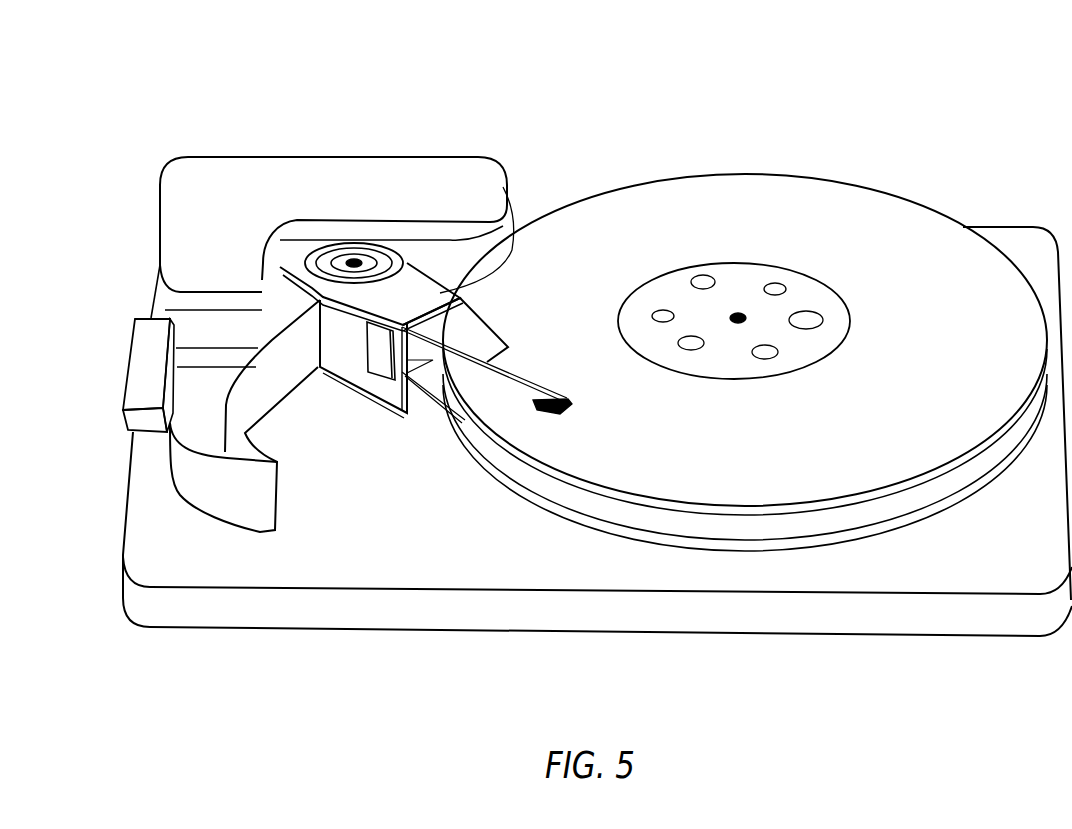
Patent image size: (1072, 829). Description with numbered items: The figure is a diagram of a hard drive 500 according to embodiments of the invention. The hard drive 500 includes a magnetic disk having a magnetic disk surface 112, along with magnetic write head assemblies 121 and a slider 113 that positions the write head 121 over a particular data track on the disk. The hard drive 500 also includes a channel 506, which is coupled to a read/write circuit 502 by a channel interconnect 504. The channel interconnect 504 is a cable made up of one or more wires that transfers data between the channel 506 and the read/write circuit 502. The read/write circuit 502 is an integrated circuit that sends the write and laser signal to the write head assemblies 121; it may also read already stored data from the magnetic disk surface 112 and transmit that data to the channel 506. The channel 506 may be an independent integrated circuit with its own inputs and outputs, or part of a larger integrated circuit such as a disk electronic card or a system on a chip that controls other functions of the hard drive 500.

The hard drive 500 is at (1043, 56).
The read/write circuit 502 is at (404, 327).
The slider 113 is at (417, 295).
The magnetic disk surface 112 is at (857, 227).
The magnetic write head assembly 121 is at (547, 412).
The channel 506 is at (146, 363).
The channel interconnect 504 is at (225, 502).